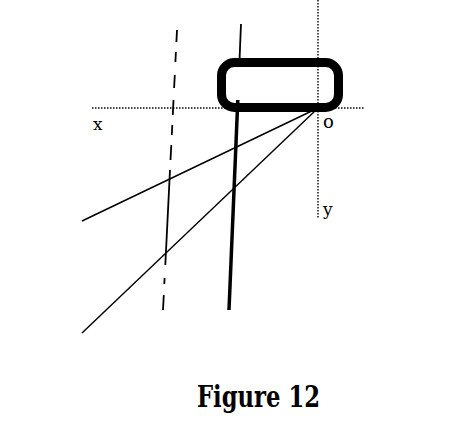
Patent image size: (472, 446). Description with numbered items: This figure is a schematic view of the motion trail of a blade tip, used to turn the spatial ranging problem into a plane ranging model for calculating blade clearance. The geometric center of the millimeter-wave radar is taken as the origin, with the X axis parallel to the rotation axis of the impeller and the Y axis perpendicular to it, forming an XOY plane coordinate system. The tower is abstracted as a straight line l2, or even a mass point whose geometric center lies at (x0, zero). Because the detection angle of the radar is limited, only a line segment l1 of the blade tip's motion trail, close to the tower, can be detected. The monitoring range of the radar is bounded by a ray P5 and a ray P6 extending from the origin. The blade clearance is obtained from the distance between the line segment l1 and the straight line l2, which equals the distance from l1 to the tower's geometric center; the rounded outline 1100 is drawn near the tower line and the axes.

The slot / rounded rectangular region 1100 is at (341, 62).
The line segment l1 is at (172, 158).
The straight line l2 is at (239, 156).
The ray P5 is at (185, 172).
The ray P6 is at (184, 227).
The geometric center coordinate x0 is at (211, 129).